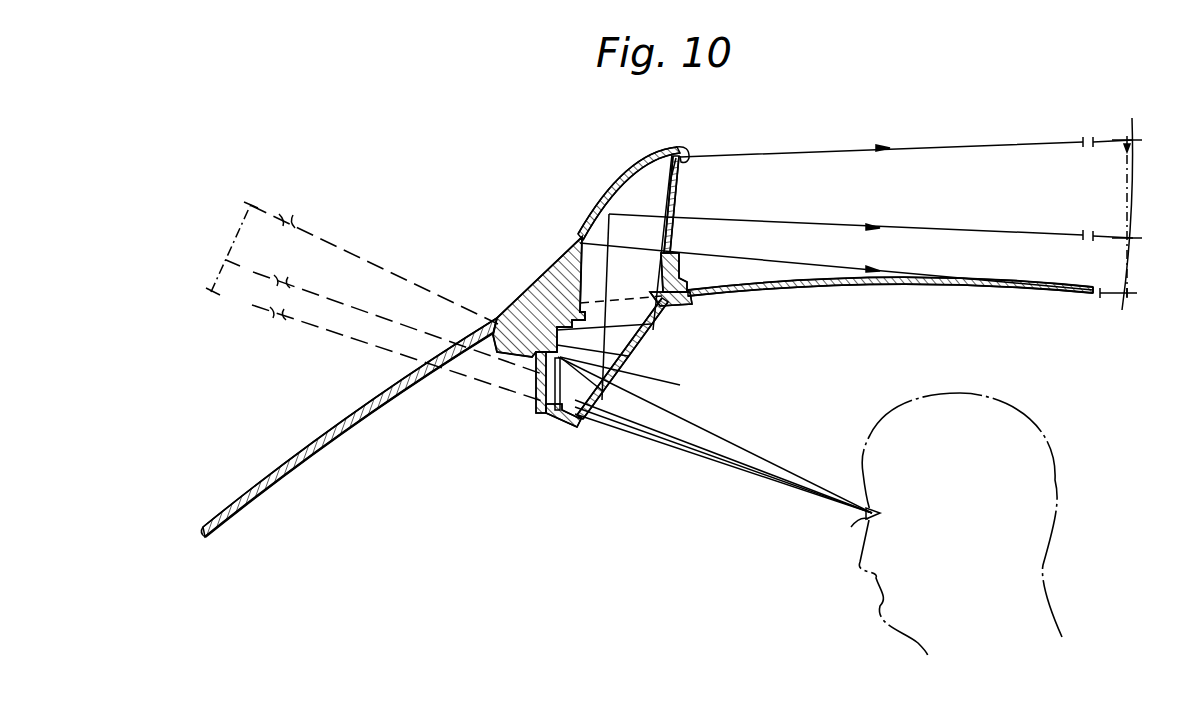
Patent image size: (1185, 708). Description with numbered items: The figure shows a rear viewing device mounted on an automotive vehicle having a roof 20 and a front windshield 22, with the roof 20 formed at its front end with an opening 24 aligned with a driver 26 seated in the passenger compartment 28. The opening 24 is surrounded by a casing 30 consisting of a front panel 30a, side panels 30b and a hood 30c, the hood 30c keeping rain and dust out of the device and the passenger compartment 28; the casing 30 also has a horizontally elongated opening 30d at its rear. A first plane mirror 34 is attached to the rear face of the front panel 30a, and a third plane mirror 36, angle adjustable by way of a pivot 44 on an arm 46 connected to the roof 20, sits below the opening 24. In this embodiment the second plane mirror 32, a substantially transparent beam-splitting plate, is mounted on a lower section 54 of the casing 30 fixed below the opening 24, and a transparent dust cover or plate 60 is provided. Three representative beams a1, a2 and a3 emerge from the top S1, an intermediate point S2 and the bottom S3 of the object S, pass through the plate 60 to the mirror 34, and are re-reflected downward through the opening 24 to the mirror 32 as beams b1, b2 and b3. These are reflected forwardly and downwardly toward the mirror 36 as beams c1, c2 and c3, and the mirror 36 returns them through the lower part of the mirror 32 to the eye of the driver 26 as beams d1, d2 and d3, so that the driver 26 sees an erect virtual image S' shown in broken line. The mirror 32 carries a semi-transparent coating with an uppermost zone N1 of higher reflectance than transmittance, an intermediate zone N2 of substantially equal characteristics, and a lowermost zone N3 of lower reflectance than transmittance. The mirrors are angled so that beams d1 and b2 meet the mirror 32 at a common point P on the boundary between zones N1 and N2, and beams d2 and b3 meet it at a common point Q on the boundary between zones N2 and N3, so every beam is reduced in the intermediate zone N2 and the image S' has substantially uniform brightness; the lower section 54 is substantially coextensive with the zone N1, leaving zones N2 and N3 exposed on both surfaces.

The roof 20 is at (874, 332).
The front windshield 22 is at (326, 438).
The opening 24 is at (556, 277).
The driver 26 is at (975, 477).
The passenger compartment 28 is at (825, 402).
The casing 30 is at (623, 238).
The front panel 30a is at (623, 194).
The side panels 30b is at (682, 278).
The hood 30c is at (690, 160).
The horizontally elongated opening 30d is at (680, 256).
The second plane mirror 32 is at (614, 306).
The first plane mirror 34 is at (668, 157).
The third plane mirror 36 is at (560, 415).
The pivot 44 is at (550, 423).
The arm 46 is at (536, 386).
The lower section 54 is at (671, 341).
The transparent dust cover or plate 60 is at (676, 242).
The object S is at (1142, 214).
The top of the object S1 is at (1134, 123).
The intermediate point of the object S2 is at (1127, 241).
The bottom of the object S3 is at (1117, 317).
The erect virtual image S' is at (433, 302).
The beam a1 is at (966, 143).
The beam a2 is at (999, 231).
The beam a3 is at (986, 280).
The beam b1 is at (676, 191).
The beam b2 is at (606, 226).
The beam b3 is at (579, 243).
The beam c1 is at (634, 343).
The beam c2 is at (620, 375).
The beam c3 is at (592, 421).
The beam d1 is at (757, 471).
The beam d2 is at (727, 459).
The beam d3 is at (690, 456).
The uppermost horizontal zone N1 is at (658, 327).
The intermediate horizontal zone N2 is at (640, 431).
The lowermost horizontal zone N3 is at (600, 439).
The common point P is at (652, 401).
The common point Q is at (612, 429).